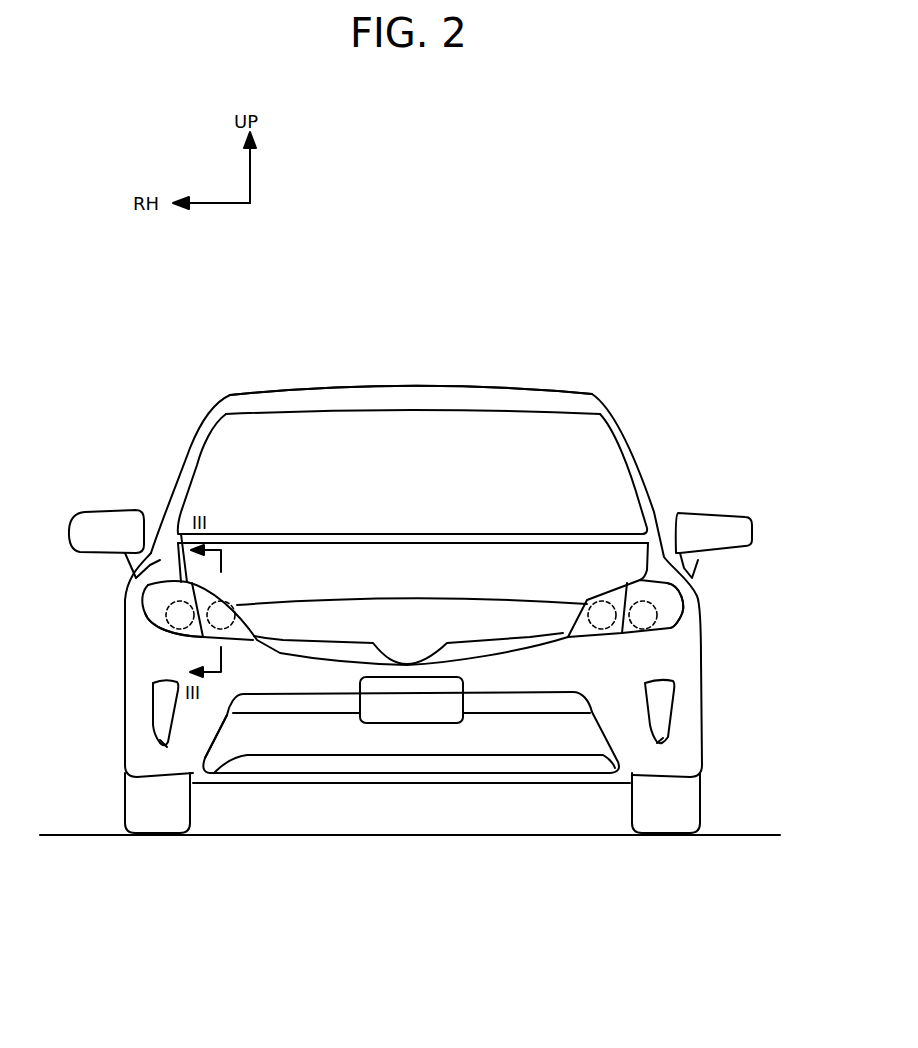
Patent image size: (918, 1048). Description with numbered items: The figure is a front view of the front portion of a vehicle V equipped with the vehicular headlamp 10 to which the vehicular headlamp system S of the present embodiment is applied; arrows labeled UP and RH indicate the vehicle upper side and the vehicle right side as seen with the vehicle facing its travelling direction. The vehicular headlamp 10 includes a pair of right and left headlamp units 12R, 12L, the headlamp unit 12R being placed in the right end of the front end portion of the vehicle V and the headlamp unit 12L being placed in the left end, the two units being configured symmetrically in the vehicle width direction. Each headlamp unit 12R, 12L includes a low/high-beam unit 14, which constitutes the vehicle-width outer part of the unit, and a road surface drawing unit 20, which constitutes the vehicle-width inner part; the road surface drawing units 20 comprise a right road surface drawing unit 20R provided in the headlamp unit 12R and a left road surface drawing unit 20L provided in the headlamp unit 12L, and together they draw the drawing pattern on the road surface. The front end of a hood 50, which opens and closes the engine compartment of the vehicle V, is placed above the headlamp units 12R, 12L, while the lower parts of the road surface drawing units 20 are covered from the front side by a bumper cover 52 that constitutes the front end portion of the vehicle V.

The vehicular headlamp 10 is at (400, 641).
The right headlamp unit 12R is at (152, 630).
The left headlamp unit 12L is at (660, 632).
The low/high-beam unit 14 is at (150, 624).
The road surface drawing unit 20 is at (411, 597).
The right road surface drawing unit 20R is at (238, 628).
The left road surface drawing unit 20L is at (582, 627).
The hood 50 is at (185, 557).
The bumper cover 52 is at (207, 700).
The vehicle V is at (641, 361).
The vehicular headlamp system S is at (92, 722).